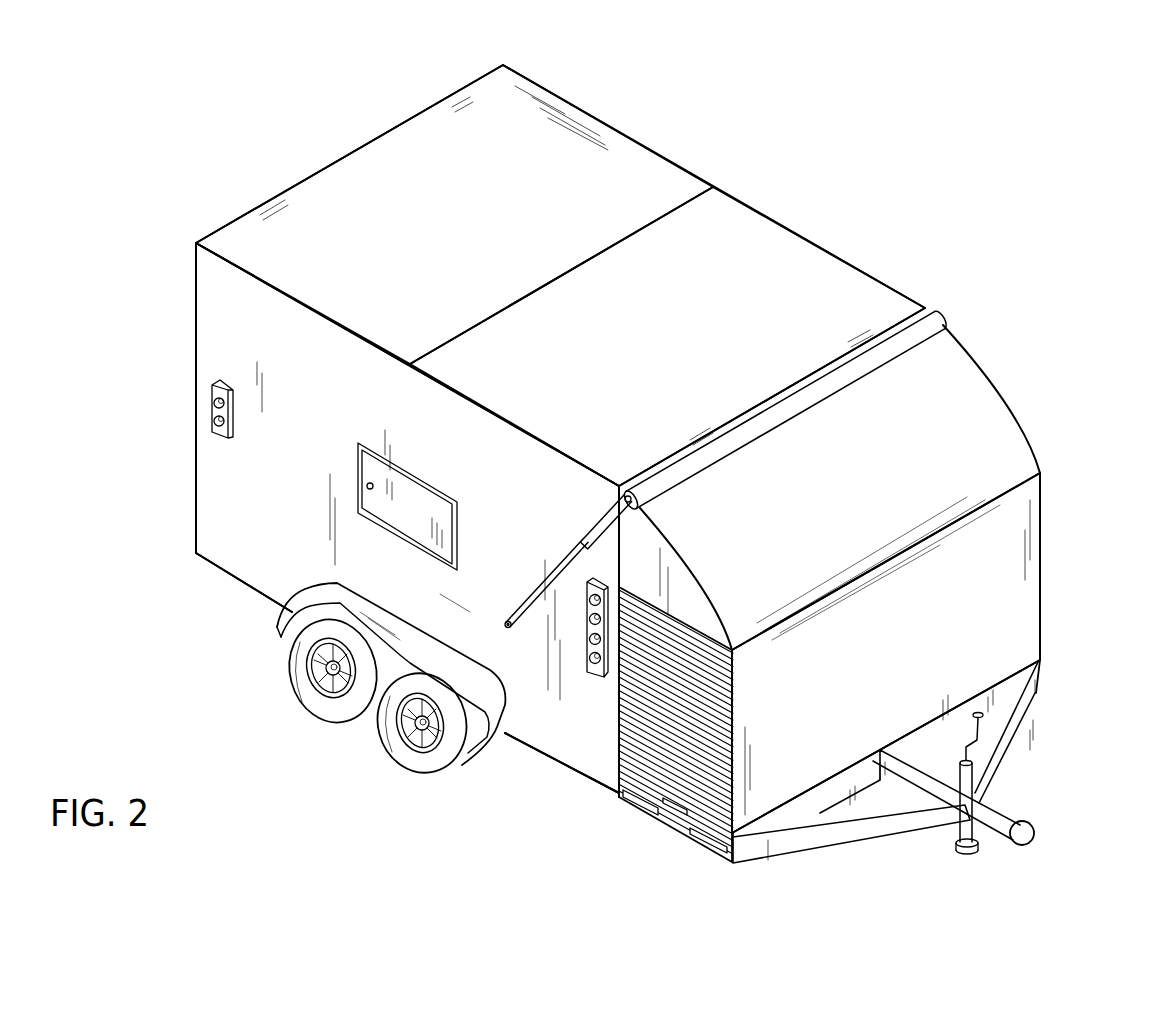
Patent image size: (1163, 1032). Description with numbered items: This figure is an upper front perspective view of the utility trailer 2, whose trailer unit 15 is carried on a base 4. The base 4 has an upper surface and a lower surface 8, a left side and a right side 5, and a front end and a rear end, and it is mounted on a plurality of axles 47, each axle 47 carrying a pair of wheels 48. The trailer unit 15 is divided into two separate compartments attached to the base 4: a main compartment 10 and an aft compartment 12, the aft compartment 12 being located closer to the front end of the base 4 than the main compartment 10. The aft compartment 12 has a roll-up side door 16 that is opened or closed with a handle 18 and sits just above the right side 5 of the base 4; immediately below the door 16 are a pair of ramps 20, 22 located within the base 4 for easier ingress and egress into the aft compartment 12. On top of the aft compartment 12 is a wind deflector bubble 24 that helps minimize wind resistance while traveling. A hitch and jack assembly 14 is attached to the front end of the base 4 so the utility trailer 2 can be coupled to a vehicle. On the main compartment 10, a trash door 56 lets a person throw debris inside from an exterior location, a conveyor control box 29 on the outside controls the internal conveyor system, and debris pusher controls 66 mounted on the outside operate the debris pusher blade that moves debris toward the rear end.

The utility trailer 2 is at (718, 168).
The base 4 is at (218, 570).
The right side 5 is at (253, 593).
The lower surface 8 is at (506, 733).
The main compartment 10 is at (597, 146).
The aft compartment 12 is at (1032, 557).
The hitch and jack assembly 14 is at (1012, 753).
The trailer unit 15 is at (625, 178).
The roll-up side door 16 is at (643, 748).
The handle 18 is at (675, 810).
The ramp 20 is at (628, 798).
The ramp 22 is at (716, 850).
The wind deflector bubble 24 is at (983, 403).
The conveyor control box 29 is at (212, 386).
The axle 47 is at (331, 672).
The wheel 48 is at (300, 683).
The trash door 56 is at (366, 505).
The debris pusher controls 66 is at (597, 676).